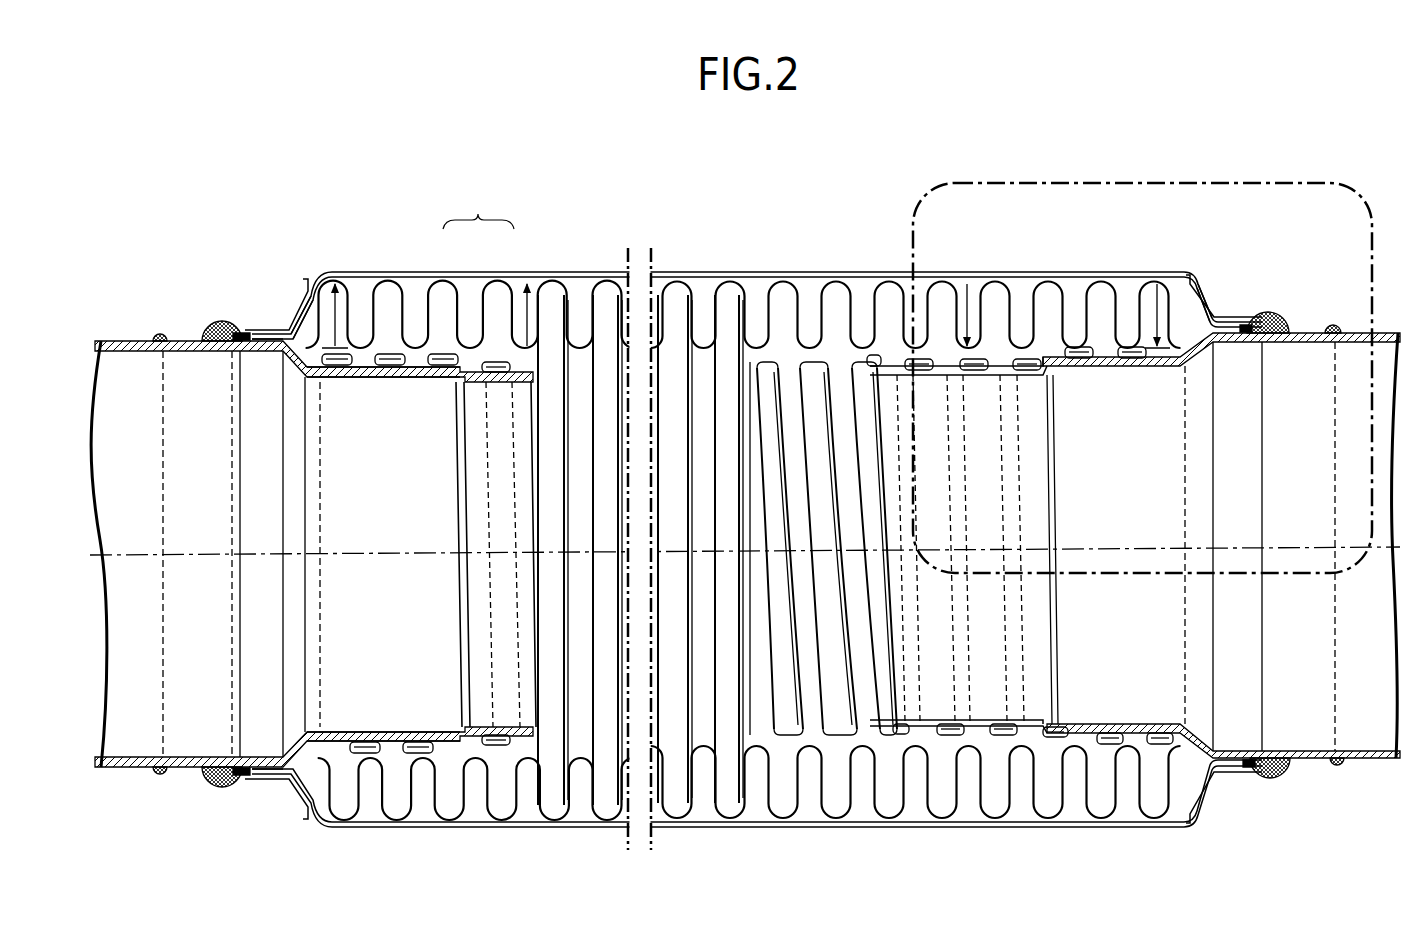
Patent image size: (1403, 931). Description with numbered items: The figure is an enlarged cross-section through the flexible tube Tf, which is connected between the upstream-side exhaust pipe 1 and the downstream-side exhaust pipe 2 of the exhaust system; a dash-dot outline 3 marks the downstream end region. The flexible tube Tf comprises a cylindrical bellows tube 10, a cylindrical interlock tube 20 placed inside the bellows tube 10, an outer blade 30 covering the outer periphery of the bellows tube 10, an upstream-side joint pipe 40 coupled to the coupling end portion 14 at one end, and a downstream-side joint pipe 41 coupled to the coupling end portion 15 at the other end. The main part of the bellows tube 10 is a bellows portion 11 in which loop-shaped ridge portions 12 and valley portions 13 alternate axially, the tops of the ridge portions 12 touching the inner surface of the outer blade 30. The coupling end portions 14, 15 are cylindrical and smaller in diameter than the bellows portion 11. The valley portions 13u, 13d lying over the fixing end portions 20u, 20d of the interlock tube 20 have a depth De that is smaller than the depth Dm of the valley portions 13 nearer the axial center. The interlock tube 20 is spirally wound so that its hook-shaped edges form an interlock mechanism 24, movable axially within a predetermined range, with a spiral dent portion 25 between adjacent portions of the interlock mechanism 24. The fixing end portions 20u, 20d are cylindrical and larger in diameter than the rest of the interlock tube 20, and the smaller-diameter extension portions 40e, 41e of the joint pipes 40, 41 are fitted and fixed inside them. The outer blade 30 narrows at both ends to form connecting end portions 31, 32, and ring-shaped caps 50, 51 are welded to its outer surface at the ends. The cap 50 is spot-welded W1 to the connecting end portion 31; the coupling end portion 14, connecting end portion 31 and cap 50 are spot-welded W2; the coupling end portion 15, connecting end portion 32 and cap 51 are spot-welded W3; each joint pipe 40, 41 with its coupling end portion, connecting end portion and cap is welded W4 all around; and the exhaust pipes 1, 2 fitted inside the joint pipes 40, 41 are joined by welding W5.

The upstream-side exhaust pipe 1 is at (128, 770).
The downstream-side exhaust pipe 2 is at (1394, 770).
The flexible tube region 3 is at (929, 186).
The bellows tube 10 is at (712, 288).
The bellows portion 11 is at (478, 208).
The ridge portion 12 is at (490, 343).
The valley portion 13 is at (470, 343).
The upstream-side valley portion 13u is at (445, 343).
The downstream-side valley portion 13d is at (1125, 343).
The upstream-side coupling end portion 14 is at (265, 354).
The downstream-side coupling end portion 15 is at (1245, 347).
The interlock tube 20 is at (721, 484).
The upstream-side fixing end portion 20u is at (368, 379).
The downstream-side fixing end portion 20d is at (1097, 378).
The interlock mechanism 24 is at (1068, 347).
The dent portion 25 is at (766, 326).
The outer blade 30 is at (806, 268).
The upstream-side connecting end portion 31 is at (284, 360).
The downstream-side connecting end portion 32 is at (1218, 348).
The upstream-side joint pipe 40 is at (252, 356).
The extension portion 40e is at (443, 374).
The downstream-side joint pipe 41 is at (1250, 355).
The extension portion 41e is at (1083, 378).
The upstream-side cap 50 is at (304, 280).
The downstream-side cap 51 is at (1192, 300).
The spot-welding W1 is at (265, 337).
The spot-welding W2 is at (245, 332).
The spot-welding W3 is at (1244, 324).
The welding W4 is at (222, 322).
The welding W5 is at (157, 338).
The depth De is at (338, 300).
The depth Dm is at (530, 290).
The flexible tube Tf is at (645, 213).